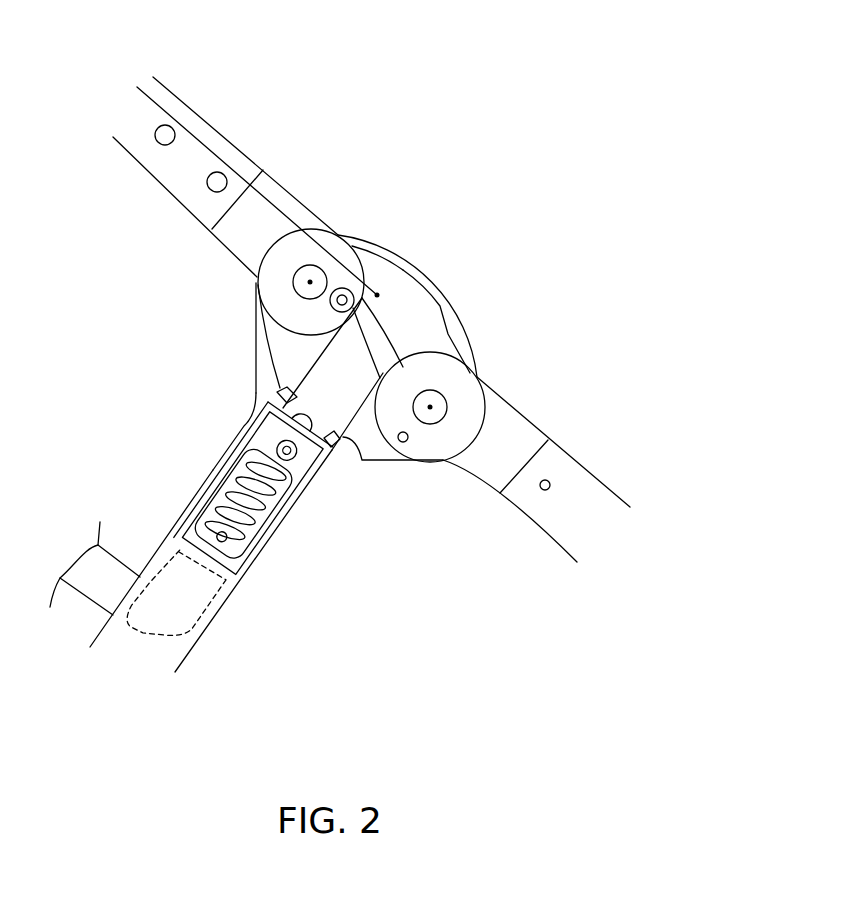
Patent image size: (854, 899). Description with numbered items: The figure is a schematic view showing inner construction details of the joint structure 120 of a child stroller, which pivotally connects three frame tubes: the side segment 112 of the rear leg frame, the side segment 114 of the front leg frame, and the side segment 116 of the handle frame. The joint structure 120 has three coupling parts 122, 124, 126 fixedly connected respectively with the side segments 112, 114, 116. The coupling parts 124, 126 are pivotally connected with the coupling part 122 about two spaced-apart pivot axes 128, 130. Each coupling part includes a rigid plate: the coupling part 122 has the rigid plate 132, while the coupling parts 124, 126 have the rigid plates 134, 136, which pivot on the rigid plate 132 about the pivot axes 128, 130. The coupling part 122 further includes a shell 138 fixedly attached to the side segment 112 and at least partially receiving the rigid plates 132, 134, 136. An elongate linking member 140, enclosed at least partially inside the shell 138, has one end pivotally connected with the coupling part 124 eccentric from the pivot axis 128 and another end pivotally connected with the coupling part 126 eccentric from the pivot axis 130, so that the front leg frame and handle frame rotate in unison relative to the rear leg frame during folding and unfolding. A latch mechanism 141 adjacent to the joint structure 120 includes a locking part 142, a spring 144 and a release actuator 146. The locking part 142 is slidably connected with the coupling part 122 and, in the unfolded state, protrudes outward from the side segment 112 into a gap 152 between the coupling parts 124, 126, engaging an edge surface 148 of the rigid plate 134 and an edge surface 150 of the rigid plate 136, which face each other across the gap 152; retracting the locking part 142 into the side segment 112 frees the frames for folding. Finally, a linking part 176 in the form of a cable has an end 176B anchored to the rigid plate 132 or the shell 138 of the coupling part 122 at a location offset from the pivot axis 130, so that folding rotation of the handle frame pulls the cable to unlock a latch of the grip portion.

The side segment 112 is at (233, 592).
The side segment 114 is at (592, 473).
The side segment 116 is at (180, 98).
The joint structure 120 is at (358, 204).
The coupling part 122 is at (434, 277).
The coupling part 124 is at (527, 399).
The coupling part 126 is at (304, 189).
The pivot axis 128 is at (430, 410).
The pivot axis 130 is at (310, 282).
The rigid plate 132 is at (403, 280).
The rigid plate 134 is at (382, 450).
The rigid plate 136 is at (273, 338).
The shell 138 is at (463, 328).
The linking member 140 is at (380, 347).
The latch mechanism 141 is at (232, 405).
The locking part 142 is at (341, 353).
The spring 144 is at (214, 482).
The release actuator 146 is at (80, 595).
The edge surface 148 is at (342, 473).
The edge surface 150 is at (243, 399).
The gap 152 is at (328, 337).
The linking part 176 is at (197, 139).
The end 176B is at (377, 295).